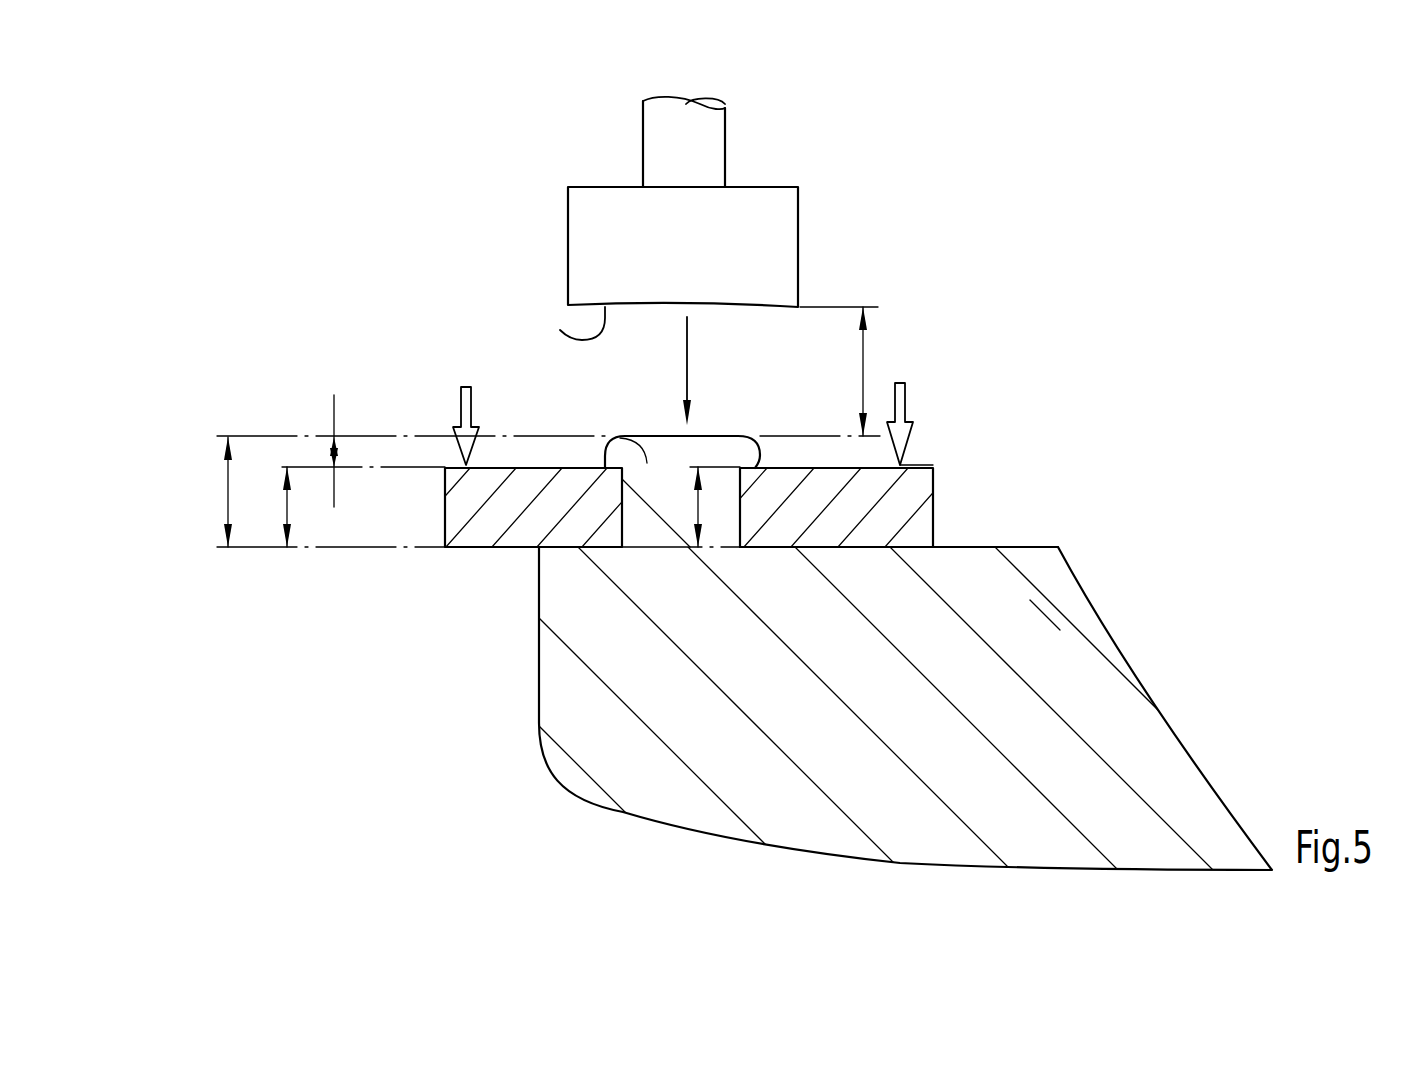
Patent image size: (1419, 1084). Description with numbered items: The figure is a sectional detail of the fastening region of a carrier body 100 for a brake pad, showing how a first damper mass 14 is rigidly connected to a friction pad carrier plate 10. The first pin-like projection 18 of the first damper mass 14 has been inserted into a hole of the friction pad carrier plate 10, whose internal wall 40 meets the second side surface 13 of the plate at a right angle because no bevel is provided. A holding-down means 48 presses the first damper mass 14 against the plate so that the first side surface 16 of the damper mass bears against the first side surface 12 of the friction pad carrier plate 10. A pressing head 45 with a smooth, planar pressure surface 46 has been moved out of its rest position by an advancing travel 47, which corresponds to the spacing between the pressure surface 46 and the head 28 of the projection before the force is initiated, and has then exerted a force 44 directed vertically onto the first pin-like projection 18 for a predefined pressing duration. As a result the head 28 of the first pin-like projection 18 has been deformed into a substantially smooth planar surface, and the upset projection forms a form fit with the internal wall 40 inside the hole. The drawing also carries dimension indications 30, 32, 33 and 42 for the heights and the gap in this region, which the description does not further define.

The carrier body 100 is at (1115, 333).
The friction pad carrier plate 10 is at (918, 483).
The first side surface of the friction pad carrier plate 12 is at (880, 540).
The second side surface of the brake pad carrier plate 13 is at (907, 465).
The first damper mass 14 is at (1047, 620).
The first side surface of the first damper mass 16 is at (1010, 546).
The first pin-like projection 18 is at (670, 508).
The head of the first pin-like projection 28 is at (630, 433).
The total height 30 is at (228, 495).
The plate thickness 32 is at (284, 500).
The gap width 33 is at (698, 497).
The internal wall of the first hole 40 is at (628, 520).
The seam excess height 42 is at (333, 457).
The force 44 is at (687, 370).
The pressing head 45 is at (800, 232).
The pressure surface 46 is at (560, 330).
The advancing travel 47 is at (875, 373).
The holding-down means 48 is at (457, 413).